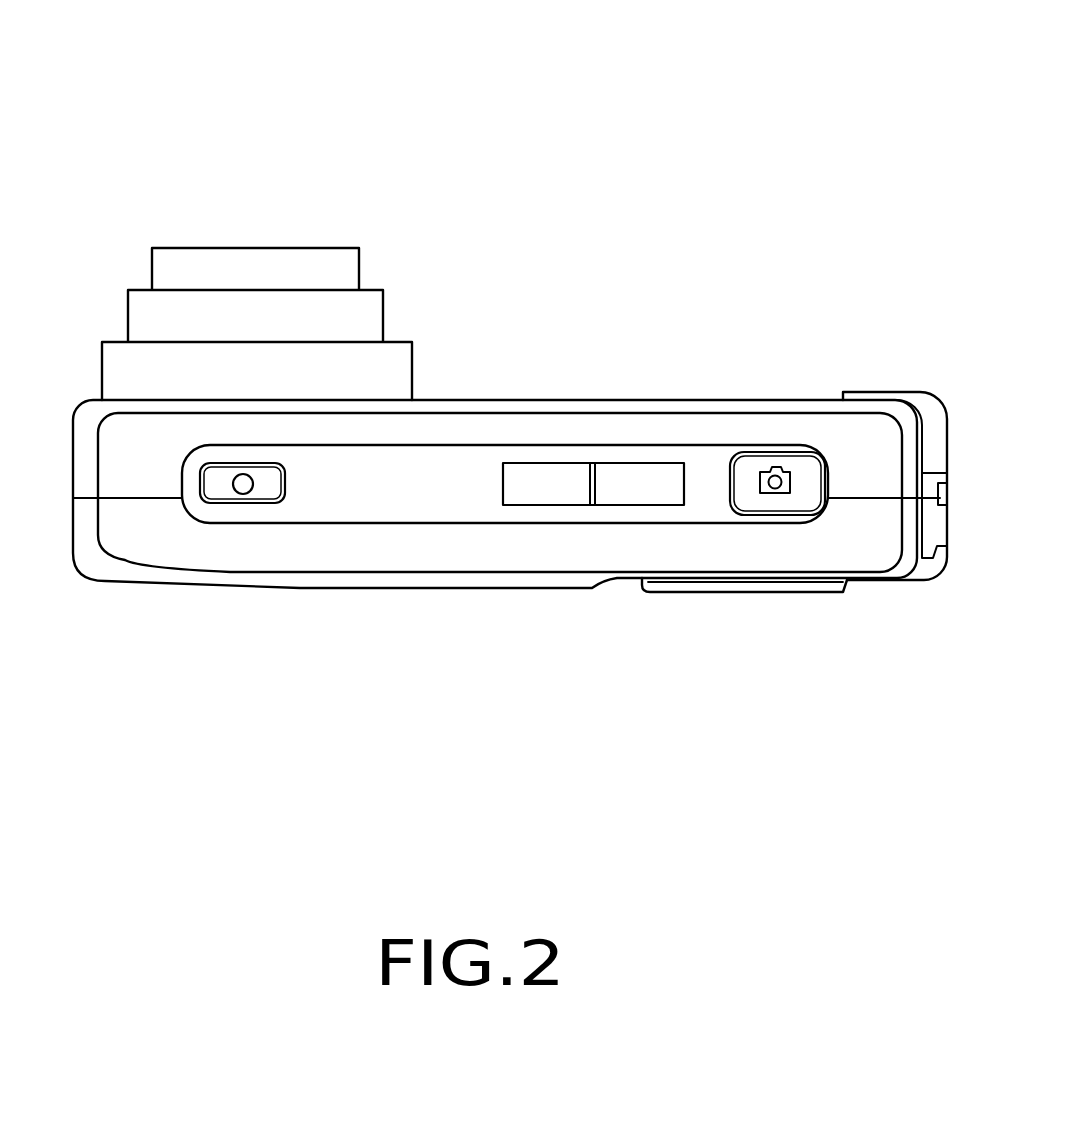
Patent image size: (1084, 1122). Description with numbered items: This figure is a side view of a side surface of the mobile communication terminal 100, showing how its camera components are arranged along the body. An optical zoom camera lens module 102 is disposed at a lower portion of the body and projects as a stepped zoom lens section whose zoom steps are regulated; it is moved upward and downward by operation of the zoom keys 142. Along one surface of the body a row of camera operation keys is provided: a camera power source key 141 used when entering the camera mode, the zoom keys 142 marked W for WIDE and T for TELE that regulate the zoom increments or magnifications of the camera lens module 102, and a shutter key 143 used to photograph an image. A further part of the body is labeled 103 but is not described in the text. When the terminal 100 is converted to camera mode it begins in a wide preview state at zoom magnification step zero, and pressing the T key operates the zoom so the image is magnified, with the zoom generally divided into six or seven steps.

The mobile communication terminal 100 is at (648, 98).
The optical zoom camera lens module 102 is at (250, 263).
The lower body 103 is at (757, 553).
The camera power source key 141 is at (225, 490).
The zoom keys 142 is at (570, 497).
The shutter key 143 is at (762, 463).